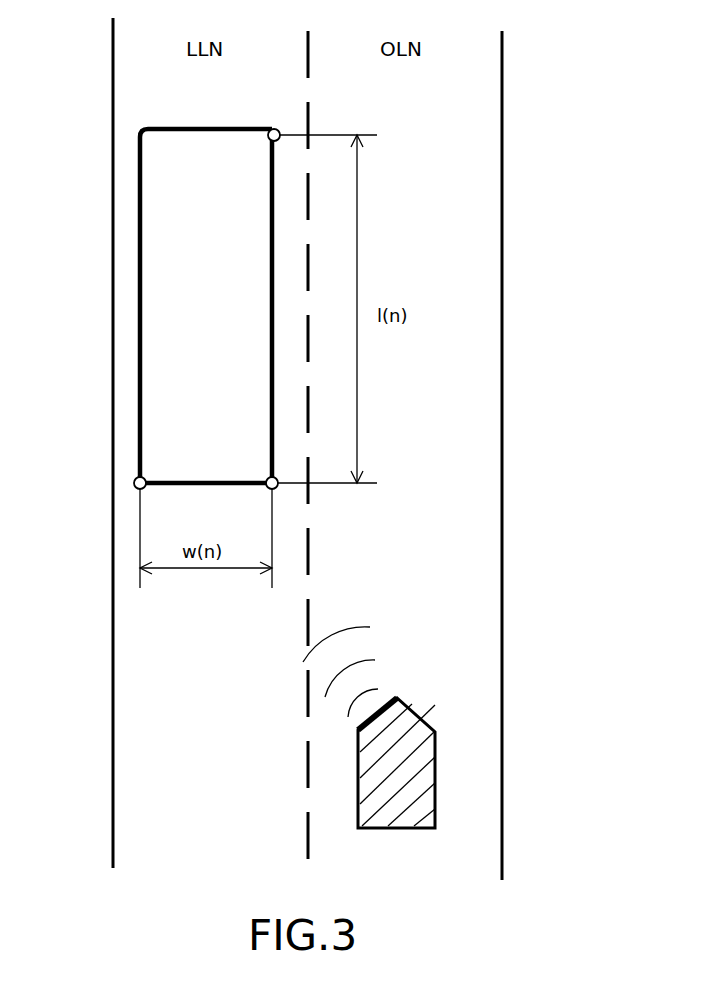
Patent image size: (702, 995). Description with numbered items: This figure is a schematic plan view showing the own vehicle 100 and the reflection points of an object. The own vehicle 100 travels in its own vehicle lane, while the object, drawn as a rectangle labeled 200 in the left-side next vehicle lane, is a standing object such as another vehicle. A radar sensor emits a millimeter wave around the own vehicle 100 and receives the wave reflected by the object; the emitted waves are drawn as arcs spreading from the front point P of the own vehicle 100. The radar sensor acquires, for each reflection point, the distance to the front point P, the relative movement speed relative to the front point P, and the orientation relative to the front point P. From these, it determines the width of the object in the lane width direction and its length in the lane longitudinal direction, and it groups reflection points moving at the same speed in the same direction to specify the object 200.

The target region (n) / lane-change target area 200 is at (140, 297).
The own vehicle 100 is at (436, 777).
The front point P is at (400, 698).